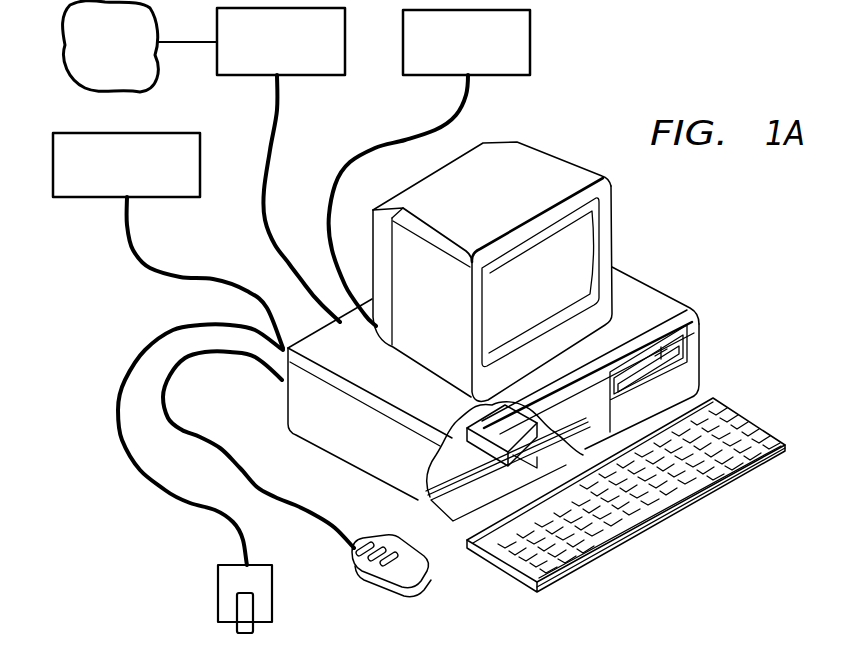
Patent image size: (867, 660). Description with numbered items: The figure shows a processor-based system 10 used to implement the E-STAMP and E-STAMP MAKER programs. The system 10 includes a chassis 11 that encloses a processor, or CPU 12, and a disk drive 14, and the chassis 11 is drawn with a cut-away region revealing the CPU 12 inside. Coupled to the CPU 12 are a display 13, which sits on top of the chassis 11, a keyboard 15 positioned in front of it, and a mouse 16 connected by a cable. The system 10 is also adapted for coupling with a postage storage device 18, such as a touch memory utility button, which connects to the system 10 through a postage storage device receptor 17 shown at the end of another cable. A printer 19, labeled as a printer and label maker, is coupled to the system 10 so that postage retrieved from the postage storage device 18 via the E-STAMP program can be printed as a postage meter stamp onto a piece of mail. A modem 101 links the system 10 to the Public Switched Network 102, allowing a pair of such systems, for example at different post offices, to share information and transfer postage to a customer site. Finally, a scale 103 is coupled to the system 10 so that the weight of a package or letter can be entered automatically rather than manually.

The processor-based system 10 is at (664, 234).
The chassis 11 is at (655, 300).
The processor 12 is at (490, 452).
The display 13 is at (553, 165).
The disk drive 14 is at (688, 340).
The keyboard 15 is at (746, 428).
The mouse 16 is at (404, 559).
The postage storage device receptor 17 is at (272, 595).
The postage storage device 18 is at (236, 607).
The printer 19 is at (83, 198).
The modem 101 is at (248, 76).
The Public Switched Network 102 is at (140, 46).
The scale 103 is at (531, 38).